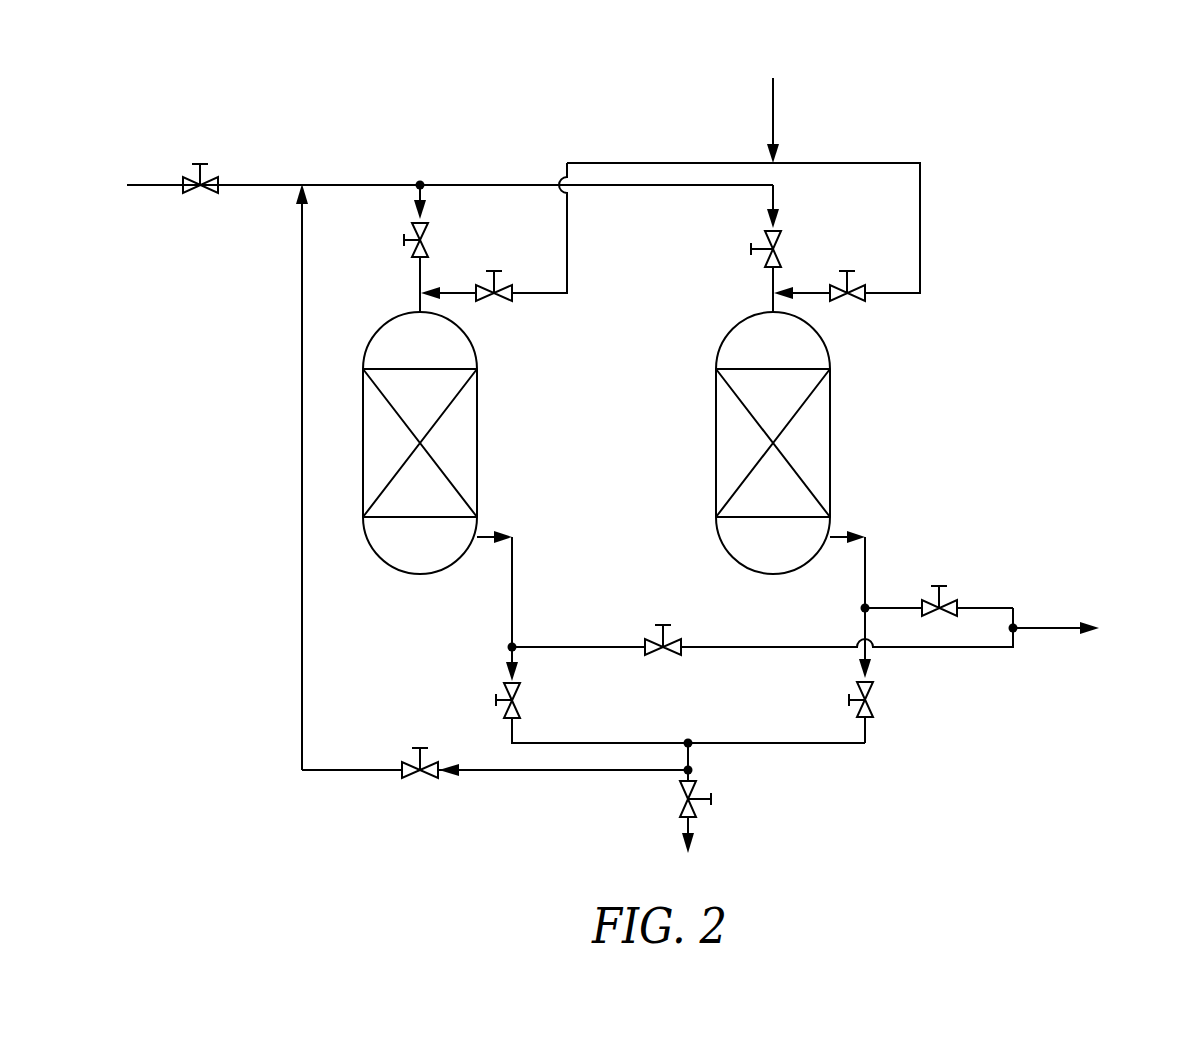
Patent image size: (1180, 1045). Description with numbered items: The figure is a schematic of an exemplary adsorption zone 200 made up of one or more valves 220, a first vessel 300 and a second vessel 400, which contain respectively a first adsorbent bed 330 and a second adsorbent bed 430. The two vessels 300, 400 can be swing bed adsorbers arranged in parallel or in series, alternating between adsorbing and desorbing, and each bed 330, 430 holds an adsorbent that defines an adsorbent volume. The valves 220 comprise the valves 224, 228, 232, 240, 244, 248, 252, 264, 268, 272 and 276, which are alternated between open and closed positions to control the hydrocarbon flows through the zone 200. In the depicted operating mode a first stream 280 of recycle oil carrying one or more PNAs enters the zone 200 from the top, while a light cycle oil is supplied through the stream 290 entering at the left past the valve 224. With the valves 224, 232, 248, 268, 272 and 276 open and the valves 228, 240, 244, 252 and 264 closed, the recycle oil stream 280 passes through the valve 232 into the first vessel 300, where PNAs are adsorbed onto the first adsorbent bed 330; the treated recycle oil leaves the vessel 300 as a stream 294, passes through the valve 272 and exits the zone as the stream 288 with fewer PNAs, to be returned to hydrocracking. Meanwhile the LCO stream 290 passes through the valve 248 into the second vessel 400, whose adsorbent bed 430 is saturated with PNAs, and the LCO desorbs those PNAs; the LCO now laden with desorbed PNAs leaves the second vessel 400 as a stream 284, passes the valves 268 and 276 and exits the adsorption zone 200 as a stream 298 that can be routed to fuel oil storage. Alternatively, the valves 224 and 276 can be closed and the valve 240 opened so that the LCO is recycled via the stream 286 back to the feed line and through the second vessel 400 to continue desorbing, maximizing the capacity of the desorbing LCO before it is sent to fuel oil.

The adsorption zone 200 is at (1095, 76).
The valves 220 is at (1097, 808).
The valve 224 is at (210, 192).
The valve 228 is at (428, 233).
The valve 232 is at (505, 302).
The valve 240 is at (436, 776).
The valve 244 is at (520, 688).
The valve 248 is at (782, 242).
The valve 252 is at (858, 302).
The valve 264 is at (933, 599).
The valve 268 is at (873, 688).
The valve 272 is at (675, 658).
The valve 276 is at (680, 790).
The first stream 280 is at (775, 100).
The stream 284 is at (863, 595).
The stream 286 is at (302, 477).
The stream 288 is at (1069, 633).
The stream 290 is at (257, 188).
The stream 294 is at (513, 599).
The stream 298 is at (690, 826).
The first vessel 300 is at (459, 443).
The first adsorbent bed 330 is at (437, 500).
The second vessel 400 is at (813, 443).
The second adsorbent bed 430 is at (790, 500).